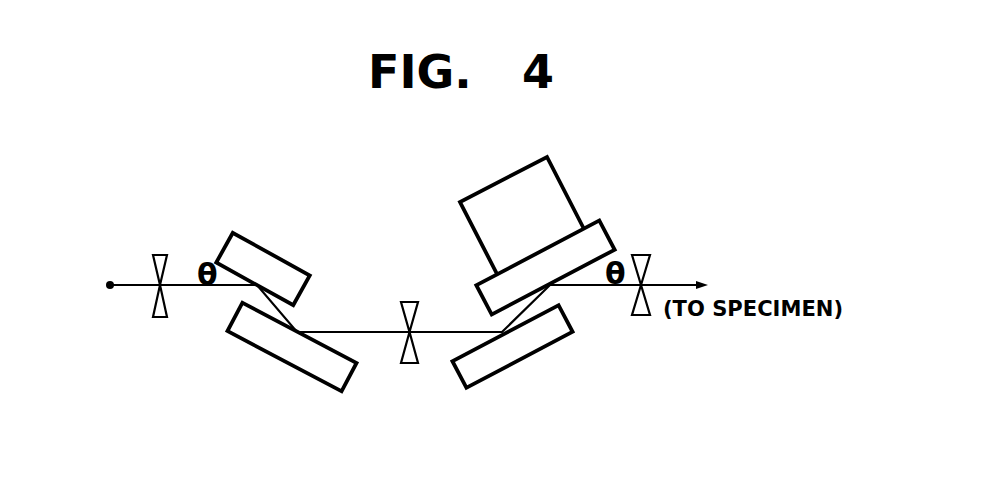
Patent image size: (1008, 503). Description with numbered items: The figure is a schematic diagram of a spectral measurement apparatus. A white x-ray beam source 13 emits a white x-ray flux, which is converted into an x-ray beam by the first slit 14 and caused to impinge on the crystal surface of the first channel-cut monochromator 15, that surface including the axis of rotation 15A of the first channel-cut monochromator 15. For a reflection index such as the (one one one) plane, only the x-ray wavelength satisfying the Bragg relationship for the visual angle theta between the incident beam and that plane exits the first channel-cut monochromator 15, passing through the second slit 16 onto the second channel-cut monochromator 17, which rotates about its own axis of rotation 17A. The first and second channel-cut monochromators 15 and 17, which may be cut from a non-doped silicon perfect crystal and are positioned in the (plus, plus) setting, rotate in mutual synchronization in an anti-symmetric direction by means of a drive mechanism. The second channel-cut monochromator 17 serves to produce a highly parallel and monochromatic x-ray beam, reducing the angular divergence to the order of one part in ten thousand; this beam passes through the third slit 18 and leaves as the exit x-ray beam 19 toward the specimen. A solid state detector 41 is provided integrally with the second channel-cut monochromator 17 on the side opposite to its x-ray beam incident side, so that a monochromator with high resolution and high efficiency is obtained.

The white x-ray beam source 13 is at (110, 282).
The first slit 14 is at (160, 255).
The first channel-cut monochromator 15 is at (253, 345).
The axis of rotation of the first channel-cut monochromator 15A is at (257, 280).
The second slit 16 is at (409, 301).
The second channel-cut monochromator 17 is at (508, 367).
The axis of rotation of the second channel-cut monochromator 17A is at (550, 283).
The third slit 18 is at (641, 255).
The exit x-ray beam 19 is at (677, 283).
The solid state detector 41 is at (470, 210).